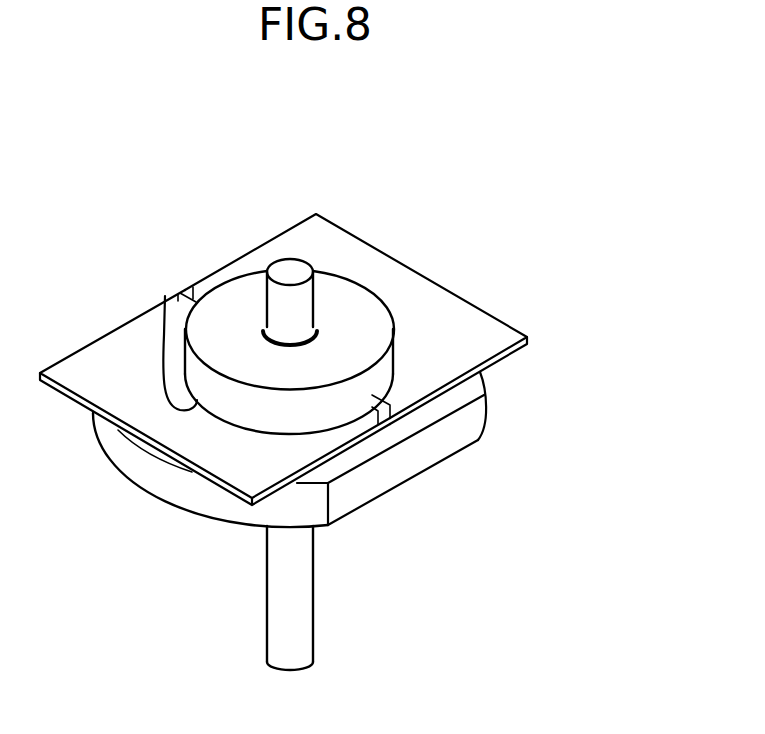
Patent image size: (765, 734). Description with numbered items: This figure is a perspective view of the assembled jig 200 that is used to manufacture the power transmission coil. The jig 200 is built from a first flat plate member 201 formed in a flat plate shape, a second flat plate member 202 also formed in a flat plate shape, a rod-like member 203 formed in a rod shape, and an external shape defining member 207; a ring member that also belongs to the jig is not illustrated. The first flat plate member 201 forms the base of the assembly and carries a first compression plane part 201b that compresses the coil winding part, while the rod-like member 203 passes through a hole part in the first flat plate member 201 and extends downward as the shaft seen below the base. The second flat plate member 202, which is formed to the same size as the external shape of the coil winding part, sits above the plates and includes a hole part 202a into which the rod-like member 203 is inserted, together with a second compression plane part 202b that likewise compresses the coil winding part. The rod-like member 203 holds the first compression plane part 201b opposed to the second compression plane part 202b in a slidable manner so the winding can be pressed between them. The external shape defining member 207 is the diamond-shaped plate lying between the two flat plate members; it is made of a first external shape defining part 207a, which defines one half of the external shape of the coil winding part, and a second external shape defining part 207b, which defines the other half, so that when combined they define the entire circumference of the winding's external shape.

The jig 200 is at (375, 183).
The first flat plate member 201 is at (134, 466).
The first compression plane part 201b is at (355, 455).
The second flat plate member 202 is at (360, 342).
The hole part 202a is at (318, 318).
The second compression plane part 202b is at (165, 296).
The rod-like member 203 is at (323, 642).
The external shape defining member 207 is at (273, 352).
The first external shape defining part 207a is at (78, 372).
The second external shape defining part 207b is at (378, 270).